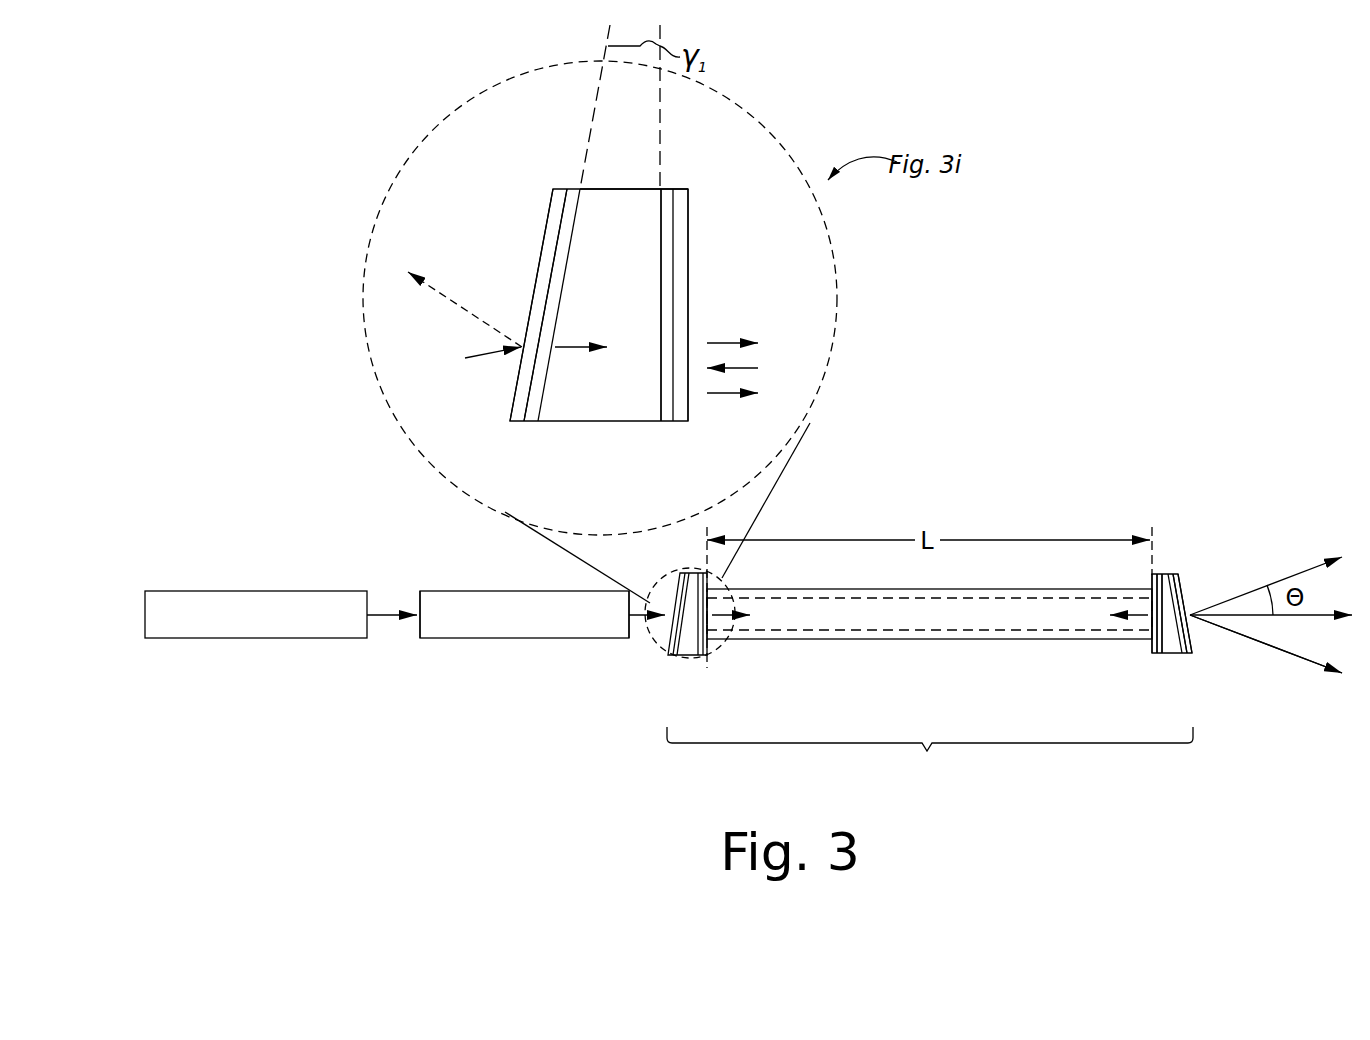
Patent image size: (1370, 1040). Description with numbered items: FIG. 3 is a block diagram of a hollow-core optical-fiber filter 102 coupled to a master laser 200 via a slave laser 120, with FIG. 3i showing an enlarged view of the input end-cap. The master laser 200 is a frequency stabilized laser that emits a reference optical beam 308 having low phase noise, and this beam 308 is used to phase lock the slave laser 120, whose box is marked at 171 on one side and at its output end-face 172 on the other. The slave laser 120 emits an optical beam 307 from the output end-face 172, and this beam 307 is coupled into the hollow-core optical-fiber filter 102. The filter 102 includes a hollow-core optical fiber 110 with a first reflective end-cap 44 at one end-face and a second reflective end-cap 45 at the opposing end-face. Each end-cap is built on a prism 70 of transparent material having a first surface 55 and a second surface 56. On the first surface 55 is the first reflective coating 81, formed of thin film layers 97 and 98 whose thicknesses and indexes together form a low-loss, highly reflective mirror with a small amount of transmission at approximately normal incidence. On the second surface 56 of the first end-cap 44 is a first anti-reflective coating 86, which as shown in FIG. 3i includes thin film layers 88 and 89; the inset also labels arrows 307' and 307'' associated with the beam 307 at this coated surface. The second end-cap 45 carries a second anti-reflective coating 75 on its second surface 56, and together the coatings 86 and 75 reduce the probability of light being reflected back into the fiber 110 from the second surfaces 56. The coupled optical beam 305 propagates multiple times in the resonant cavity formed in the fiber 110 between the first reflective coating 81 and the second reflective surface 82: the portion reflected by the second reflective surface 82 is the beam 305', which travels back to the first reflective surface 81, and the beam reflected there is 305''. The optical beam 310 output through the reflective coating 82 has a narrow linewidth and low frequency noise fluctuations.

In FIG. 3, the master laser 200 is at (256, 614).
In FIG. 3, the slave laser 120 is at (524, 614).
In FIG. 3, the optical beam 308 is at (383, 610).
In FIG. 3, the master laser housing/output 171 is at (418, 638).
In FIG. 3, the output end-face 172 is at (630, 638).
In FIG. 3i, the optical beam 307 is at (489, 382).
In FIG. 3, the optical beam 307 is at (640, 585).
In FIG. 3i, the reflected beam portion 307' is at (458, 312).
In FIG. 3i, the transmitted beam portion 307'' is at (589, 374).
In FIG. 3i, the first reflective end-cap 44 is at (510, 430).
In FIG. 3, the first reflective end-cap 44 is at (668, 661).
In FIG. 3, the second reflective end-cap 45 is at (1152, 668).
In FIG. 3, the hollow-core optical fiber 110 is at (929, 614).
In FIG. 3, the hollow-core optical-fiber filter 102 is at (930, 764).
In FIG. 3i, the optical beam 305 is at (747, 316).
In FIG. 3, the optical beam 305 is at (739, 643).
In FIG. 3i, the optical beam 305' is at (768, 345).
In FIG. 3, the optical beam 305' is at (1121, 642).
In FIG. 3i, the optical beam 305'' is at (740, 419).
In FIG. 3i, the first surface 55 is at (660, 262).
In FIG. 3, the first surface 55 is at (1167, 607).
In FIG. 3i, the second surface 56 is at (559, 307).
In FIG. 3, the second surface 56 is at (1178, 653).
In FIG. 3i, the prism 70 is at (593, 187).
In FIG. 3, the prism 70 is at (1165, 572).
In FIG. 3, the second anti-reflective coating 75 is at (1178, 562).
In FIG. 3i, the first reflective coating 81 is at (661, 185).
In FIG. 3, the second reflective surface 82 is at (1157, 562).
In FIG. 3i, the first anti-reflective coating 86 is at (580, 185).
In FIG. 3i, the thin film layer 88 is at (557, 233).
In FIG. 3i, the thin film layer 89 is at (567, 256).
In FIG. 3i, the thin film layer 97 is at (686, 275).
In FIG. 3i, the thin film layer 98 is at (671, 238).
In FIG. 3, the optical beam 310 is at (1288, 682).